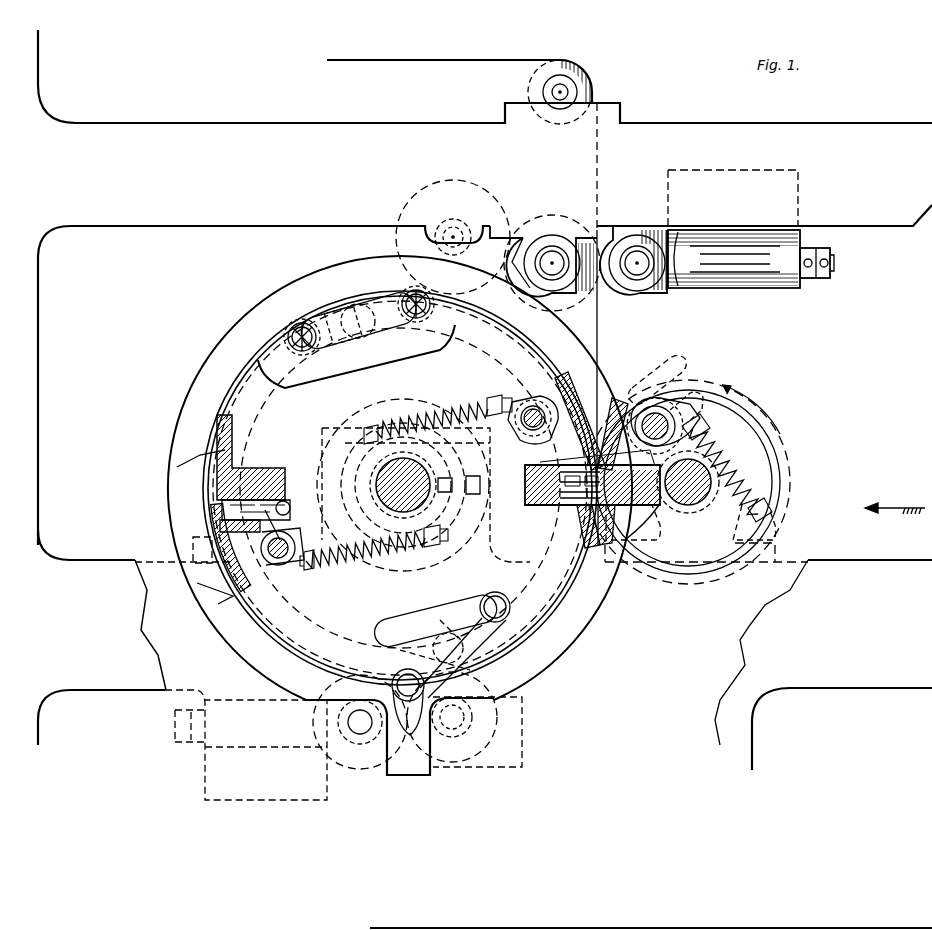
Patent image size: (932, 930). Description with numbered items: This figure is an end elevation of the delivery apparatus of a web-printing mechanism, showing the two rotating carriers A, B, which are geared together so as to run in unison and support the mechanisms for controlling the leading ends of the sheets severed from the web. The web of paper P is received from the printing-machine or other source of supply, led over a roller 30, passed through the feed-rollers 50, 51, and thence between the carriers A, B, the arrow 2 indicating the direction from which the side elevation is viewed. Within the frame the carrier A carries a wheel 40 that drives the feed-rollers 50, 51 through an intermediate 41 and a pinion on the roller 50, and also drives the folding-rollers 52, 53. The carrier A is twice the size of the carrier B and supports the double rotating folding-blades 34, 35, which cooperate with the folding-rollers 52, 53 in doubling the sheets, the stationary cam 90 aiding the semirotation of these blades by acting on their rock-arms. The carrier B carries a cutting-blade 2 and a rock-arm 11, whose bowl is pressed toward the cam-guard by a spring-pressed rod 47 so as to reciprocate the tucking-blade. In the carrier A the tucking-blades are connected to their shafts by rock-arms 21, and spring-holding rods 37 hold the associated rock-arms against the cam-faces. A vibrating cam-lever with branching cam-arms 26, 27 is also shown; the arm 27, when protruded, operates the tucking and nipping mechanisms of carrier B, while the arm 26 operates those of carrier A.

The cutting-blade 2 is at (895, 519).
The rock-arm 11 is at (690, 418).
The rock-arms 21 is at (288, 530).
The cam-arm 26 is at (526, 400).
The cam-arm 27 is at (676, 362).
The roller 30 is at (540, 86).
The folding-blade 34 is at (340, 338).
The folding-blade 35 is at (478, 607).
The spring-holding rods 37 is at (350, 566).
The wheel 40 is at (786, 450).
The intermediate 41 is at (486, 200).
The spring-pressed rod 47 is at (727, 468).
The feed-roller 50 is at (545, 267).
The feed-roller 51 is at (632, 273).
The folding-roller 52 is at (360, 722).
The folding-roller 53 is at (464, 719).
The stationary cam 90 is at (400, 478).
The carrier A is at (309, 408).
The carrier B is at (688, 482).
The web of paper P is at (598, 337).